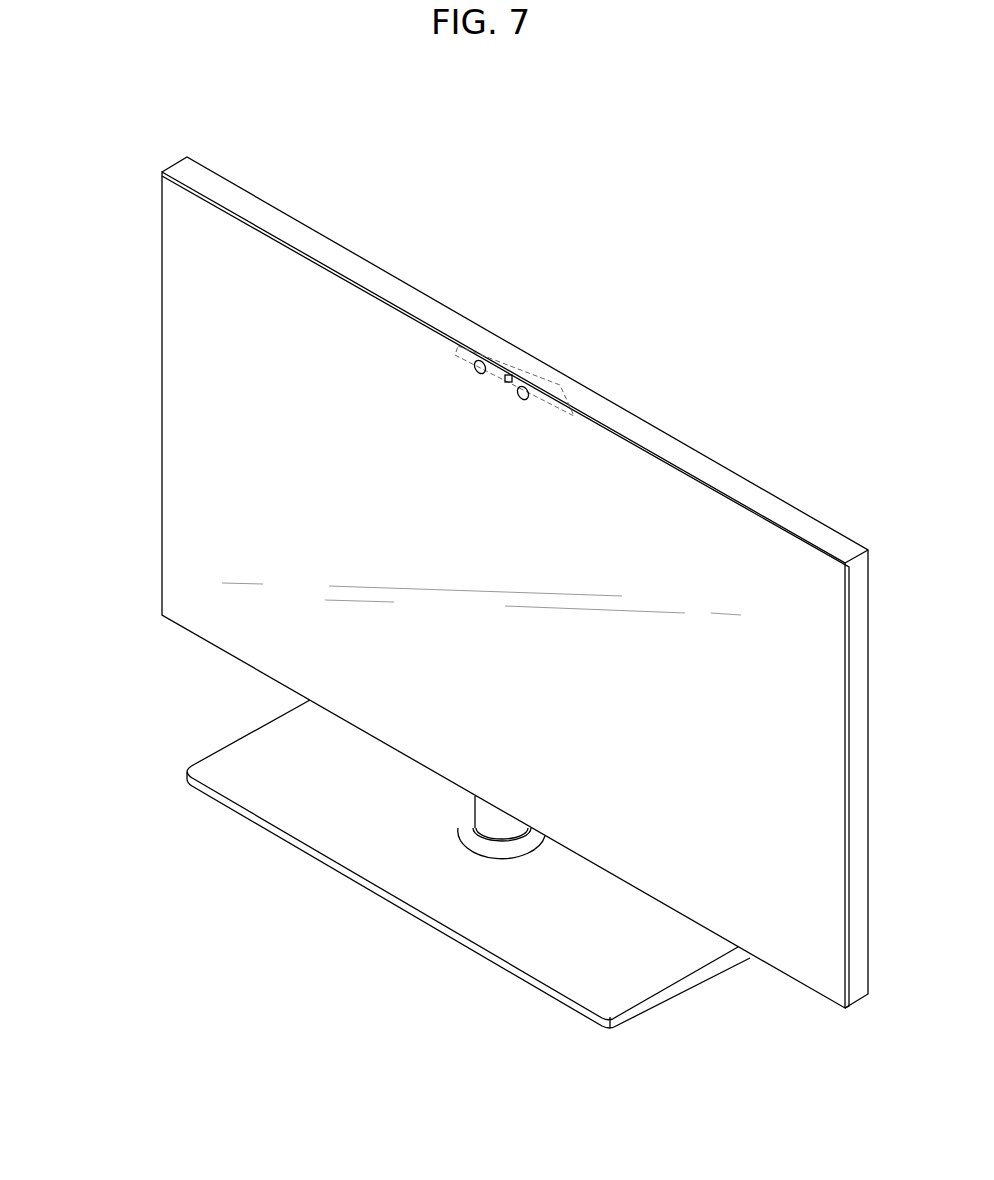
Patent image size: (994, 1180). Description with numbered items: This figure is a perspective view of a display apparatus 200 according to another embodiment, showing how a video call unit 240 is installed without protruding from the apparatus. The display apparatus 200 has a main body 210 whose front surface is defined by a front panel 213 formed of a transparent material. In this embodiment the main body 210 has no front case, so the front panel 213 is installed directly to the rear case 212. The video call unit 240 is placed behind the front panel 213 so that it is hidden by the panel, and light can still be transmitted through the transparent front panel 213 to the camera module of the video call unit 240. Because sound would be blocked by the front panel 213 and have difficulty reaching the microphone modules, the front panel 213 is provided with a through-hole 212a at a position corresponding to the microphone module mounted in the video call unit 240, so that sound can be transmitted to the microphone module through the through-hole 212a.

The display apparatus 200 is at (557, 232).
The main body 210 is at (178, 474).
The rear case 212 is at (752, 497).
The through-hole 212a is at (518, 394).
The front panel 213 is at (183, 372).
The video call unit 240 is at (547, 351).